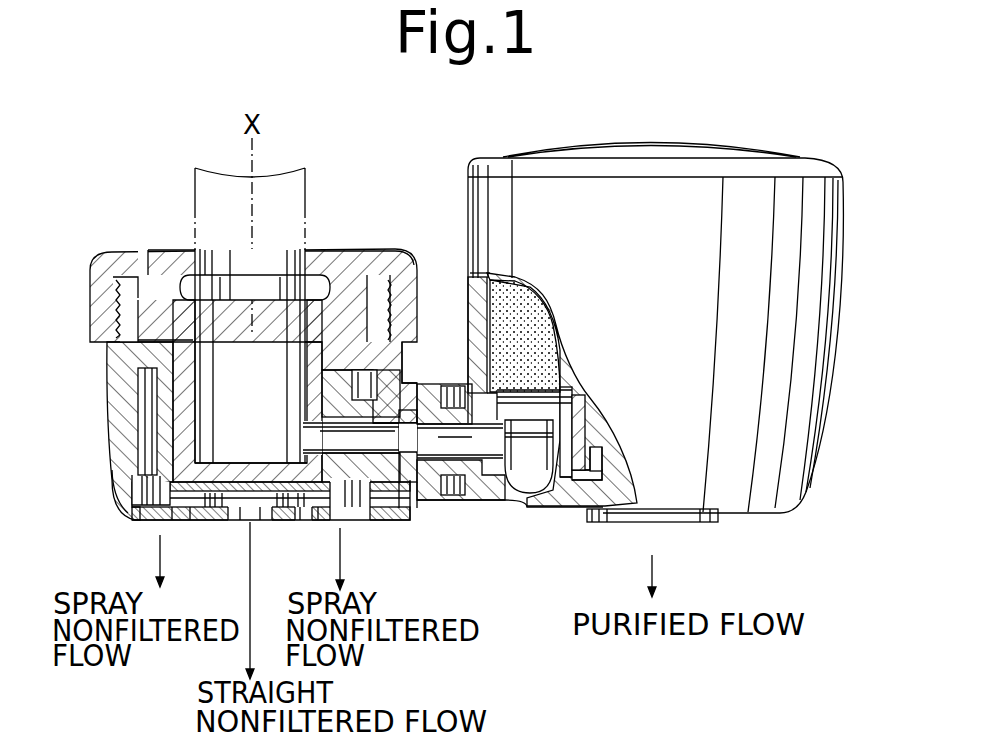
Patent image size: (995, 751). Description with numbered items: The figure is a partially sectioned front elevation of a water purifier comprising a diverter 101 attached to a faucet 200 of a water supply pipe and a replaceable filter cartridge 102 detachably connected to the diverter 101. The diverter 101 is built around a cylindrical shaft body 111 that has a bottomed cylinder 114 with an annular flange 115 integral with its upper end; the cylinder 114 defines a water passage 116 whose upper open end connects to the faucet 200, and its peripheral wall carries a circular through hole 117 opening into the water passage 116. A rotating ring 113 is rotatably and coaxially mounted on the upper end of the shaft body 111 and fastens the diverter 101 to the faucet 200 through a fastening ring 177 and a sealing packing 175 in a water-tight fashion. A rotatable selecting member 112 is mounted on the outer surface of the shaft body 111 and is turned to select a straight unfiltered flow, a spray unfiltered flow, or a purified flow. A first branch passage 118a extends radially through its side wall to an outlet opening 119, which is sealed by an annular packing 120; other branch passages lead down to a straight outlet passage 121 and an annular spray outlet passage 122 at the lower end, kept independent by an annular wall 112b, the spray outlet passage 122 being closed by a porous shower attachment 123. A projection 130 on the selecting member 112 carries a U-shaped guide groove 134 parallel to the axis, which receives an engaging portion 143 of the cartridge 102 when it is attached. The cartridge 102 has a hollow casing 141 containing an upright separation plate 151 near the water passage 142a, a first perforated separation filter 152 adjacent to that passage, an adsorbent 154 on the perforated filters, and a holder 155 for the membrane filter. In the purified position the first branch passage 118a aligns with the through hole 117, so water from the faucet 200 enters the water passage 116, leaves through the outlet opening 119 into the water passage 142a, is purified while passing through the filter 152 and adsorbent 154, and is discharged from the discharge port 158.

The diverter 101 is at (316, 234).
The filter cartridge 102 is at (887, 117).
The faucet 200 is at (203, 198).
The rotating ring 113 is at (123, 265).
The sealing packing 175 is at (163, 303).
The fastening ring 177 is at (350, 253).
The annular flange 115 is at (117, 347).
The water passage 116 is at (132, 372).
The cylindrical shaft body 111 is at (170, 398).
The bottomed cylinder 114 is at (165, 428).
The through hole 117 is at (290, 443).
The rotatable selecting member 112 is at (120, 477).
The spray outlet passage 122 is at (128, 500).
The shower attachment 123 is at (185, 522).
The straight outlet passage 121 is at (247, 522).
The annular wall 112b is at (302, 521).
The first branch passage 118a is at (350, 447).
The guide groove 134 is at (422, 370).
The projection 130 is at (455, 388).
The annular packing 120 is at (433, 500).
The engaging portion 143 is at (420, 440).
The outlet opening 119 is at (468, 497).
The water passage 142a is at (540, 493).
The discharge port 158 is at (715, 522).
The hollow casing 141 is at (813, 413).
The adsorbent 154 is at (525, 293).
The separation plate 151 is at (565, 376).
The first perforated separation filter 152 is at (548, 421).
The holder 155 is at (617, 452).